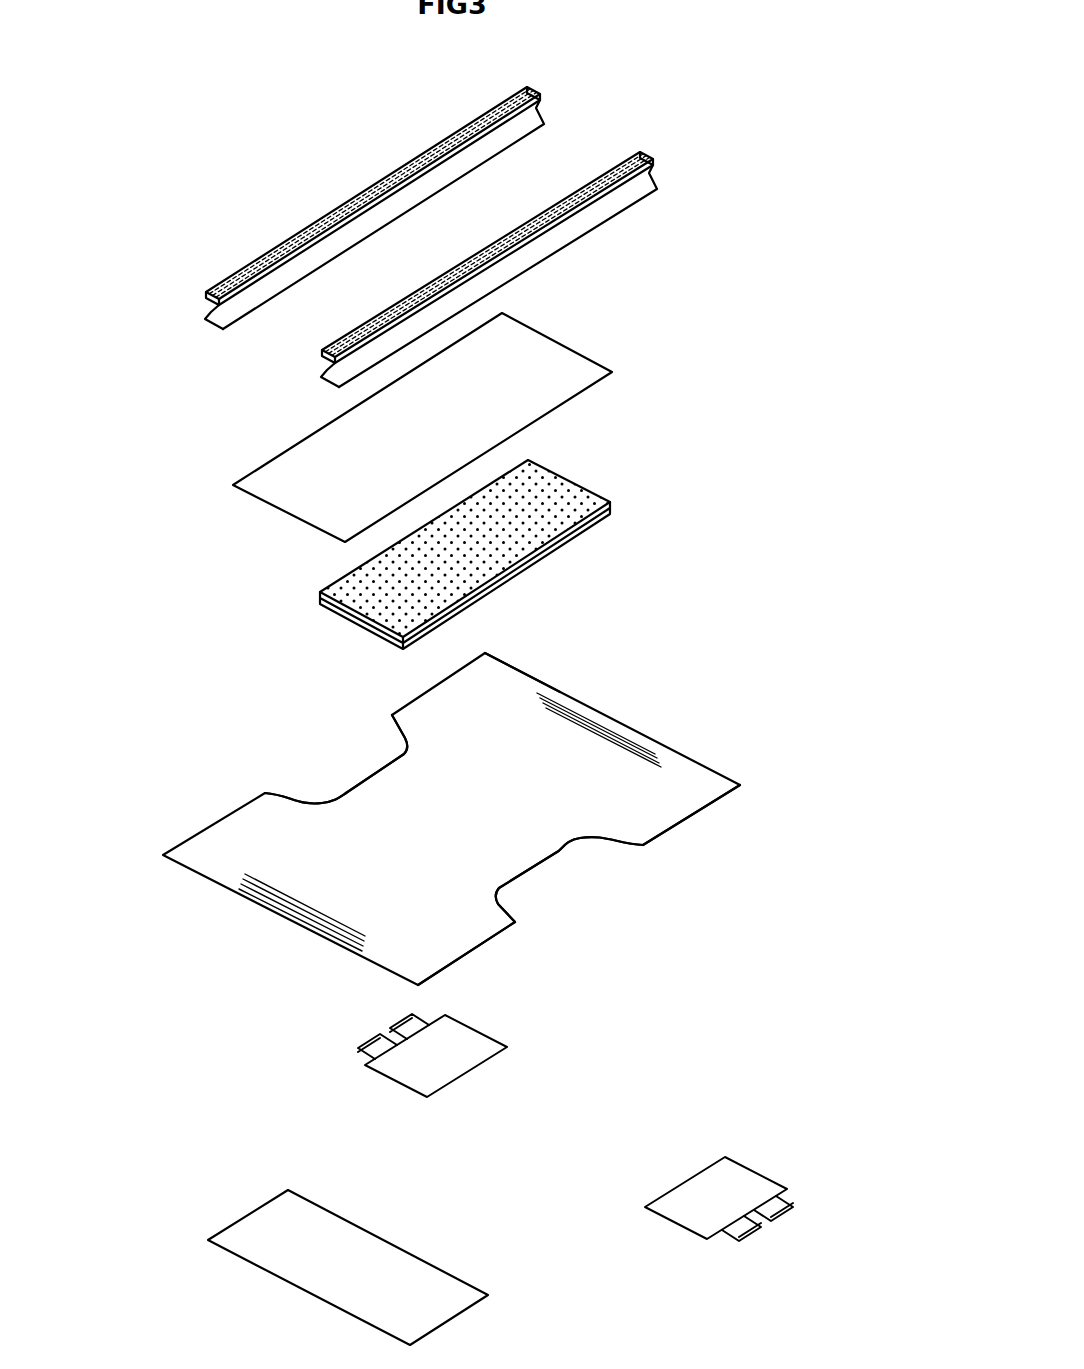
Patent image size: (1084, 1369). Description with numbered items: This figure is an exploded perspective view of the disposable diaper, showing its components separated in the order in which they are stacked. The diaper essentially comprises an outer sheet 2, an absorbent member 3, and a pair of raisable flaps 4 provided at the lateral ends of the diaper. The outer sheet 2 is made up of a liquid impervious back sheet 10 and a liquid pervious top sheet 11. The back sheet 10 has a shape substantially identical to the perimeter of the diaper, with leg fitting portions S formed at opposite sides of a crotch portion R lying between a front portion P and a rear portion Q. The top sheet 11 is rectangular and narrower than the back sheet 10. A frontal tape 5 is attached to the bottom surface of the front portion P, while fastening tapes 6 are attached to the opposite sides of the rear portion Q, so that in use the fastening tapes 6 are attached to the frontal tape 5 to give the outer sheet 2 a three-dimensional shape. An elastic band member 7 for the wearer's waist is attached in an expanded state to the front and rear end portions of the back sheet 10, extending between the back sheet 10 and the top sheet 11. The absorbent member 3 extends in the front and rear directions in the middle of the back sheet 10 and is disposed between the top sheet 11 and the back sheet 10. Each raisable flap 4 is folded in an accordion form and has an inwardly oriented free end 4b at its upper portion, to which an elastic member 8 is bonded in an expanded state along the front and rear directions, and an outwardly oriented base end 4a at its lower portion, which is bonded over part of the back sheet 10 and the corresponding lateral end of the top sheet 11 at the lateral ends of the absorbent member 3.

The outer sheet 2 is at (688, 829).
The absorbent member 3 is at (552, 500).
The raisable flap 4 is at (533, 91).
The base end 4a is at (207, 321).
The free end 4b is at (414, 225).
The frontal tape 5 is at (462, 1313).
The fastening tapes 6 is at (361, 1055).
The elastic band member 7 is at (647, 742).
The elastic member 8 is at (397, 173).
The back sheet 10 is at (498, 681).
The top sheet 11 is at (556, 348).
The leg fitting portions S is at (362, 780).
The crotch portion R is at (515, 843).
The front portion P is at (480, 948).
The rear portion Q is at (700, 793).